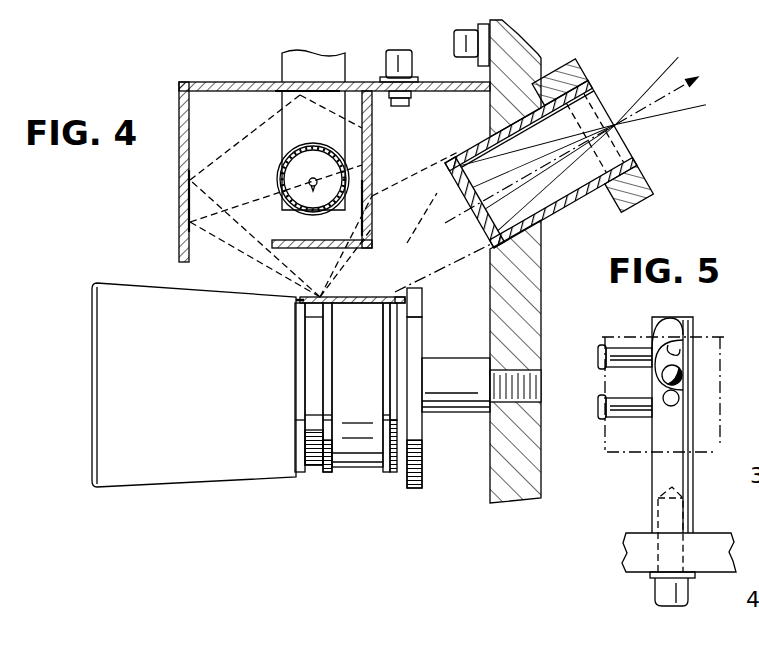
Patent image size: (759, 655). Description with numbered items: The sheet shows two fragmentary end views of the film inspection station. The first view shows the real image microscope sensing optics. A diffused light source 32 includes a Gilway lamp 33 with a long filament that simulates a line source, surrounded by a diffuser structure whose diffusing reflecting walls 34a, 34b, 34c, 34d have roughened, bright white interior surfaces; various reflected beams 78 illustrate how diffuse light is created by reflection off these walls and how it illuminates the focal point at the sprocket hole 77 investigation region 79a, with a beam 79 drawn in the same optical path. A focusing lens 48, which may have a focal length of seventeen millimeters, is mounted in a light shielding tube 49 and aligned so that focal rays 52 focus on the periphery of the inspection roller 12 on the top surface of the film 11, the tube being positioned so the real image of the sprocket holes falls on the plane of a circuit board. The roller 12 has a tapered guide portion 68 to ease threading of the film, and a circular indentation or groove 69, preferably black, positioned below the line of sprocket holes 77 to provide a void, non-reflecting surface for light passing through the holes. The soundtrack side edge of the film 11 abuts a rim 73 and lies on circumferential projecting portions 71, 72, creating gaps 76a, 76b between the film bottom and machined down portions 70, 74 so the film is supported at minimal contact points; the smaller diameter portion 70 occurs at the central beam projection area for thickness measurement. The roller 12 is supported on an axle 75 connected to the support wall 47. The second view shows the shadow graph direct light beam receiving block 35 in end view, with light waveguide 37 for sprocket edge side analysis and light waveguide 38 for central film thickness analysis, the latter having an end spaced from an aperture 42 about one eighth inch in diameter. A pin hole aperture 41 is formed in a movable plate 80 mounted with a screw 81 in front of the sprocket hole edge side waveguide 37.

In FIG. 4, the machined down portion 74 is at (228, 81).
In FIG. 4, the diffused light source 32 is at (378, 135).
In FIG. 4, the diffusing reflecting wall 34a is at (310, 248).
In FIG. 4, the diffusing reflecting wall 34b is at (396, 201).
In FIG. 4, the diffusing reflecting wall 34c is at (280, 92).
In FIG. 4, the diffusing reflecting wall 34d is at (190, 183).
In FIG. 4, the Gilway lamp 33 is at (305, 160).
In FIG. 4, the focal rays 52 is at (415, 166).
In FIG. 4, the reflected beams 78 is at (276, 171).
In FIG. 4, the light beam 79 is at (432, 192).
In FIG. 4, the sprocket hole investigation region 79a is at (300, 300).
In FIG. 4, the sprocket holes 77 is at (300, 297).
In FIG. 4, the support wall 47 is at (493, 500).
In FIG. 5, the support wall 47 is at (630, 555).
In FIG. 4, the focusing lens 48 is at (486, 153).
In FIG. 4, the light shielding tube 49 is at (582, 200).
In FIG. 4, the film 11 is at (390, 298).
In FIG. 5, the film 11 is at (627, 333).
In FIG. 4, the gap 76a is at (397, 292).
In FIG. 4, the gap 76b is at (418, 310).
In FIG. 4, the axle 75 is at (449, 370).
In FIG. 4, the machined down portion 70 is at (366, 381).
In FIG. 4, the circumferential projecting portion 71 is at (330, 398).
In FIG. 4, the circumferential projecting portion 72 is at (387, 432).
In FIG. 4, the rim 73 is at (413, 437).
In FIG. 4, the circular indentation or groove 69 is at (312, 465).
In FIG. 4, the inspection roller 12 is at (360, 478).
In FIG. 4, the tapered guide portion 68 is at (184, 402).
In FIG. 5, the light waveguide 37 is at (600, 353).
In FIG. 5, the light waveguide 38 is at (598, 407).
In FIG. 5, the movable plate 80 is at (672, 328).
In FIG. 5, the pin hole aperture 41 is at (711, 342).
In FIG. 5, the screw 81 is at (680, 378).
In FIG. 5, the aperture 42 is at (667, 407).
In FIG. 5, the block 35 is at (646, 497).